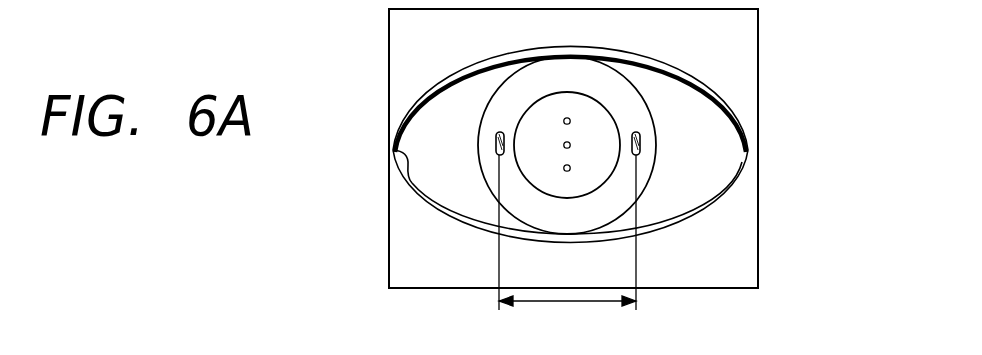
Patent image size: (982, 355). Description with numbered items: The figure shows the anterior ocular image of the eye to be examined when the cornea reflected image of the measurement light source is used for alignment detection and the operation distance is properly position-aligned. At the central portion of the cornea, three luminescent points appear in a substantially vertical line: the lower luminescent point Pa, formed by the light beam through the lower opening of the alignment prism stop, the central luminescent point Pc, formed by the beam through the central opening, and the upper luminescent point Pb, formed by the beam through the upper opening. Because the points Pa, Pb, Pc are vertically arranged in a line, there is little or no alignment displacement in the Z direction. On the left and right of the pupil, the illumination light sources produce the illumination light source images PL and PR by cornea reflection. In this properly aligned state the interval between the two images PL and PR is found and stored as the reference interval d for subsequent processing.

The upper luminescent point Pb is at (570, 118).
The central luminescent point Pc is at (570, 143).
The lower luminescent point Pa is at (570, 170).
The illumination light source image PL is at (496, 138).
The illumination light source image PR is at (640, 141).
The reference interval d is at (567, 249).